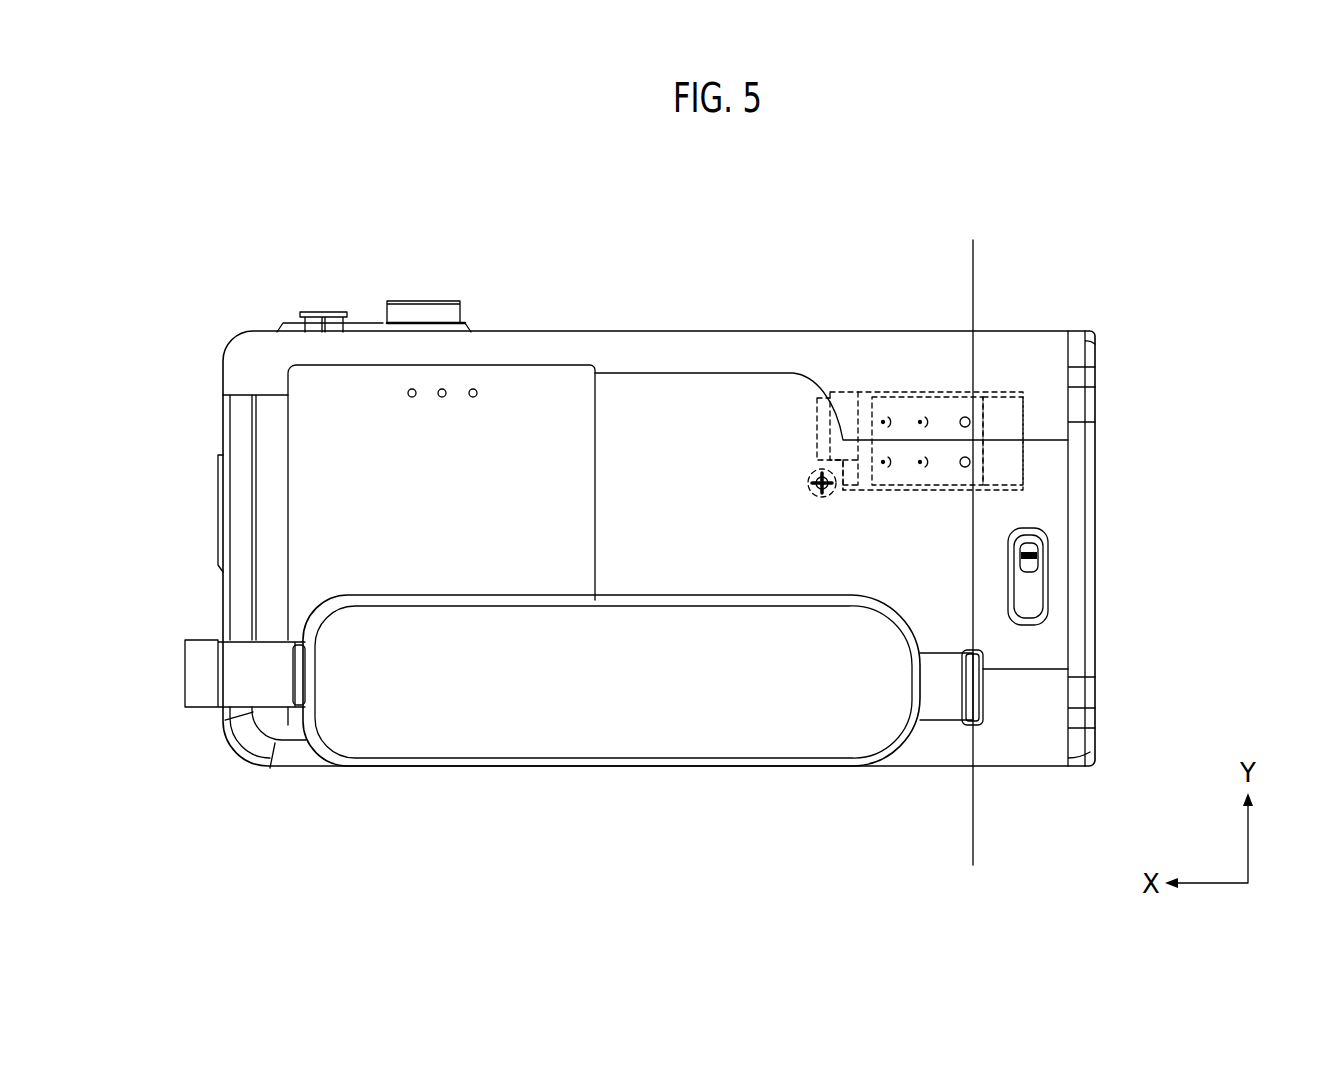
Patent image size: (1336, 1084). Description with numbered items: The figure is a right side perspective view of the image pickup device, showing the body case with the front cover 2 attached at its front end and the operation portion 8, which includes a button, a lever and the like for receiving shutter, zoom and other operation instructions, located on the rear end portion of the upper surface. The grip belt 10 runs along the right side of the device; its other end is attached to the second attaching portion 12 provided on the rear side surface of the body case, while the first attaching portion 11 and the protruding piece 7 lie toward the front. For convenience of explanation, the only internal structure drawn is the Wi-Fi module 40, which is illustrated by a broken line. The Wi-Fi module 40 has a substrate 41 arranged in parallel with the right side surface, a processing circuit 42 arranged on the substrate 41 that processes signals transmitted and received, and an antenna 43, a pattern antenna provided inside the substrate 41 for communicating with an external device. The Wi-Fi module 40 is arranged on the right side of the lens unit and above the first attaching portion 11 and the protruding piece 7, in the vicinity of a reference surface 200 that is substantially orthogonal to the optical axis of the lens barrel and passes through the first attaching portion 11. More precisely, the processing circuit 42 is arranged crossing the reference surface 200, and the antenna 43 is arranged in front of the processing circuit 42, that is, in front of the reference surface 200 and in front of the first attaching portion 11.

The front cover 2 is at (1087, 331).
The protruding piece 7 is at (1033, 562).
The operation portion 8 is at (371, 284).
The grip belt 10 is at (788, 750).
The first attaching portion 11 is at (967, 723).
The second attaching portion 12 is at (207, 624).
The Wi-Fi module 40 is at (883, 380).
The substrate 41 is at (820, 425).
The processing circuit 42 is at (948, 412).
The antenna 43 is at (1003, 403).
The reference surface 200 is at (975, 808).